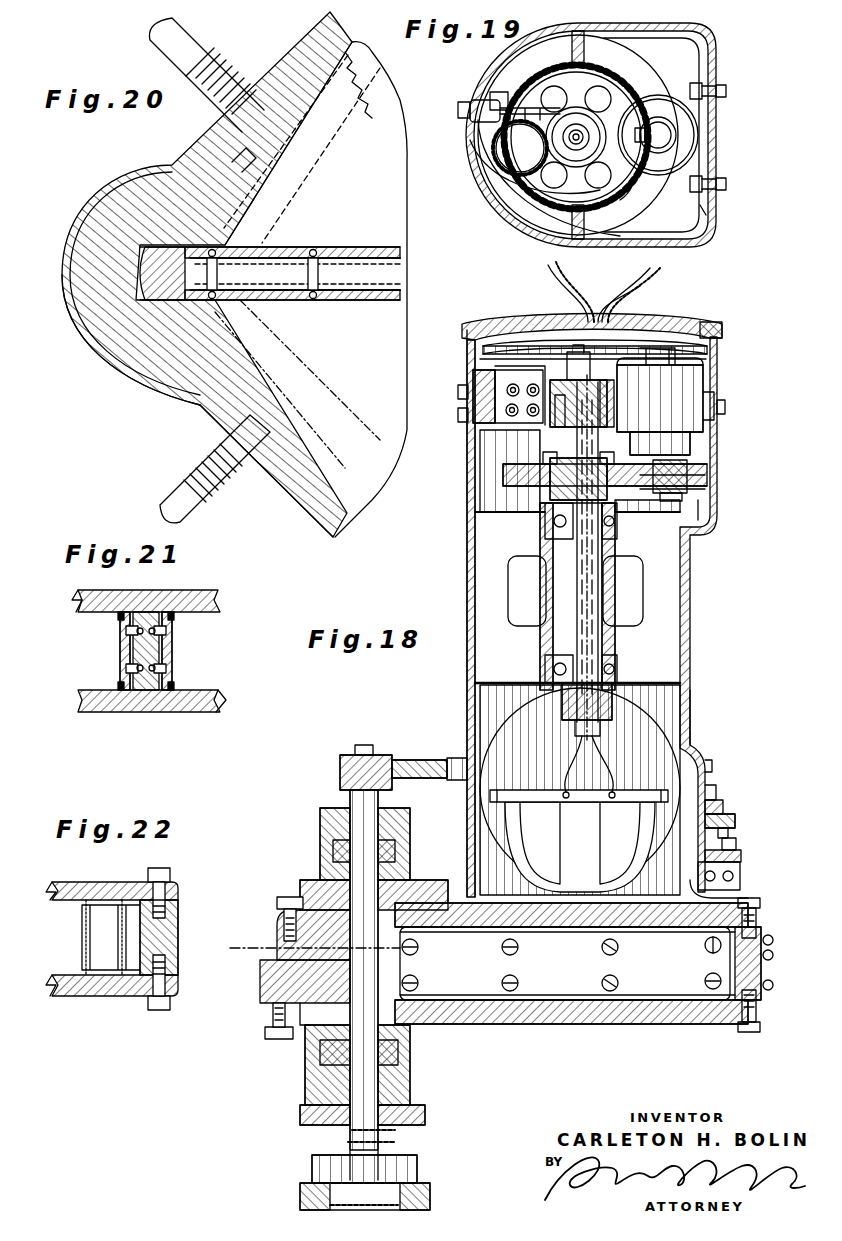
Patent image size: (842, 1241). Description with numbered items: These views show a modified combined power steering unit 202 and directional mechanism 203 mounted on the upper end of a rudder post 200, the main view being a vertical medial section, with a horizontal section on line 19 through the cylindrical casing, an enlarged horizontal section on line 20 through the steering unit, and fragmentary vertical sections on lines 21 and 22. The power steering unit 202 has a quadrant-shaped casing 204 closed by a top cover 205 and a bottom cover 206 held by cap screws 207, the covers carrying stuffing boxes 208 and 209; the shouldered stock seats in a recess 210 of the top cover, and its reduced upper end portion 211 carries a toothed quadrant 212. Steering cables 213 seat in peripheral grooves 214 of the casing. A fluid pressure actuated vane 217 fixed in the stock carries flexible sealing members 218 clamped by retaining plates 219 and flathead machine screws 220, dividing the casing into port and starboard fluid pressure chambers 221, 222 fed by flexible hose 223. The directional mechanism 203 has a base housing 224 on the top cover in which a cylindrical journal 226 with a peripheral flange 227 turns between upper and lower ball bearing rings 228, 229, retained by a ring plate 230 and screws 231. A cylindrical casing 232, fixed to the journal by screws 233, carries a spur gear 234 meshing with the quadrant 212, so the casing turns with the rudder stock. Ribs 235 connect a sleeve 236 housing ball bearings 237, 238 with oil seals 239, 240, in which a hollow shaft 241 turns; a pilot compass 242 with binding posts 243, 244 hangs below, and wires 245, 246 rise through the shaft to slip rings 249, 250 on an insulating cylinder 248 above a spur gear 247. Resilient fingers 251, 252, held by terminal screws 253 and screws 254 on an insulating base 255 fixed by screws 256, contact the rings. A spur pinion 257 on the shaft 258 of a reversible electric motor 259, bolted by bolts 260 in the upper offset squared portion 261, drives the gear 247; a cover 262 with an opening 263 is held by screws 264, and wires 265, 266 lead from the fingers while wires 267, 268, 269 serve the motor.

In FIG. 18, the section line 19— 19 is at (753, 383).
In FIG. 18, the section line 20— 20 is at (400, 950).
In FIG. 20, the section line 21— 21 is at (315, 242).
In FIG. 20, the section line 22— 22 is at (289, 330).
In FIG. 20, the rudder post 200 is at (110, 356).
In FIG. 18, the rudder post 200 is at (330, 1163).
In FIG. 20, the power steering unit 202 is at (162, 150).
In FIG. 18, the power steering unit 202 is at (268, 1045).
In FIG. 19, the directional mechanism 203 is at (728, 55).
In FIG. 18, the directional mechanism 203 is at (442, 668).
In FIG. 20, the casing 204 is at (322, 514).
In FIG. 22, the casing 204 is at (176, 912).
In FIG. 18, the casing 204 is at (272, 980).
In FIG. 21, the top cover 205 is at (195, 590).
In FIG. 22, the top cover 205 is at (68, 884).
In FIG. 18, the top cover 205 is at (275, 921).
In FIG. 21, the bottom cover 206 is at (200, 710).
In FIG. 22, the bottom cover 206 is at (118, 996).
In FIG. 18, the bottom cover 206 is at (570, 1026).
In FIG. 22, the cap screws 207 is at (148, 862).
In FIG. 18, the cap screws 207 is at (276, 900).
In FIG. 18, the stuffing box 208 is at (320, 850).
In FIG. 18, the stuffing box 209 is at (300, 1075).
In FIG. 18, the recess 210 is at (338, 900).
In FIG. 18, the reduced upper end portion 211 is at (345, 796).
In FIG. 18, the toothed quadrant 212 is at (398, 755).
In FIG. 18, the steering cables 213 is at (768, 988).
In FIG. 18, the peripheral grooves 214 is at (755, 930).
In FIG. 20, the fluid pressure actuated vane 217 is at (322, 128).
In FIG. 21, the fluid pressure actuated vane 217 is at (147, 675).
In FIG. 18, the fluid pressure actuated vane 217 is at (318, 952).
In FIG. 20, the flexible sealing members 218 is at (364, 250).
In FIG. 21, the flexible sealing members 218 is at (120, 625).
In FIG. 22, the flexible sealing members 218 is at (120, 925).
In FIG. 18, the flexible sealing members 218 is at (500, 1020).
In FIG. 20, the retaining plates 219 is at (337, 247).
In FIG. 21, the retaining plates 219 is at (172, 648).
In FIG. 18, the retaining plates 219 is at (650, 1000).
In FIG. 20, the flathead machine screws 220 is at (313, 248).
In FIG. 21, the flathead machine screws 220 is at (172, 635).
In FIG. 18, the flathead machine screws 220 is at (705, 978).
In FIG. 20, the port fluid pressure chamber 221 is at (285, 64).
In FIG. 21, the port fluid pressure chamber 221 is at (222, 680).
In FIG. 20, the starboard fluid pressure chamber 222 is at (386, 505).
In FIG. 21, the starboard fluid pressure chamber 222 is at (92, 616).
In FIG. 22, the starboard fluid pressure chamber 222 is at (68, 955).
In FIG. 20, the flexible pipes or hose 223 is at (152, 40).
In FIG. 18, the base housing 224 is at (742, 860).
In FIG. 18, the cylindrical journal 226 is at (722, 810).
In FIG. 18, the peripheral flange 227 is at (740, 876).
In FIG. 18, the upper ball bearing ring 228 is at (735, 826).
In FIG. 18, the lower ball bearing ring 229 is at (740, 897).
In FIG. 18, the retaining ring plate 230 is at (737, 851).
In FIG. 18, the round-head machine screws 231 is at (735, 842).
In FIG. 19, the cylindrical casing 232 is at (478, 124).
In FIG. 18, the cylindrical casing 232 is at (692, 712).
In FIG. 18, the round-head screws 233 is at (712, 795).
In FIG. 18, the spur gear 234 is at (708, 768).
In FIG. 19, the ribs or webs 235 is at (574, 50).
In FIG. 18, the ribs or webs 235 is at (665, 553).
In FIG. 18, the sleeve 236 is at (640, 588).
In FIG. 18, the ball bearing 237 is at (615, 522).
In FIG. 18, the ball bearing 238 is at (615, 660).
In FIG. 18, the oil seal 239 is at (560, 500).
In FIG. 18, the oil seal 240 is at (615, 683).
In FIG. 18, the hollow shaft 241 is at (590, 608).
In FIG. 18, the pilot compass 242 is at (660, 730).
In FIG. 18, the central binding post 243 is at (579, 841).
In FIG. 18, the second binding post 244 is at (605, 780).
In FIG. 18, the wire 245 is at (560, 470).
In FIG. 18, the wire 246 is at (600, 468).
In FIG. 19, the spur gear 247 is at (622, 202).
In FIG. 18, the spur gear 247 is at (503, 476).
In FIG. 19, the insulating cylinder 248 is at (598, 108).
In FIG. 18, the insulating cylinder 248 is at (592, 360).
In FIG. 18, the slip ring 249 is at (630, 408).
In FIG. 19, the slip ring 250 is at (627, 174).
In FIG. 18, the slip ring 250 is at (610, 380).
In FIG. 18, the resilient finger 251 is at (560, 420).
In FIG. 19, the resilient finger 252 is at (586, 80).
In FIG. 18, the resilient finger 252 is at (555, 378).
In FIG. 19, the terminal screws 253 is at (530, 96).
In FIG. 18, the terminal screws 253 is at (512, 368).
In FIG. 19, the round-head machine screws 254 is at (500, 92).
In FIG. 18, the round-head machine screws 254 is at (496, 378).
In FIG. 19, the insulating base 255 is at (482, 97).
In FIG. 18, the insulating base 255 is at (503, 368).
In FIG. 19, the round-head machine screws 256 is at (462, 104).
In FIG. 18, the round-head machine screws 256 is at (466, 410).
In FIG. 18, the spur pinion 257 is at (690, 485).
In FIG. 18, the shaft 258 is at (690, 475).
In FIG. 19, the reversible electric motor 259 is at (690, 141).
In FIG. 18, the reversible electric motor 259 is at (712, 376).
In FIG. 19, the bolts 260 is at (724, 91).
In FIG. 18, the bolts 260 is at (722, 412).
In FIG. 19, the upper offset squared portion 261 is at (718, 212).
In FIG. 18, the upper offset squared portion 261 is at (706, 500).
In FIG. 18, the cover 262 is at (668, 322).
In FIG. 18, the opening 263 is at (598, 324).
In FIG. 18, the round-head machine screws 264 is at (712, 330).
In FIG. 19, the wire 265 is at (483, 150).
In FIG. 18, the wire 265 is at (546, 270).
In FIG. 19, the wire 266 is at (522, 182).
In FIG. 18, the wire 266 is at (553, 276).
In FIG. 18, the wire 267 is at (640, 274).
In FIG. 18, the wire 268 is at (662, 278).
In FIG. 18, the wire 269 is at (652, 283).